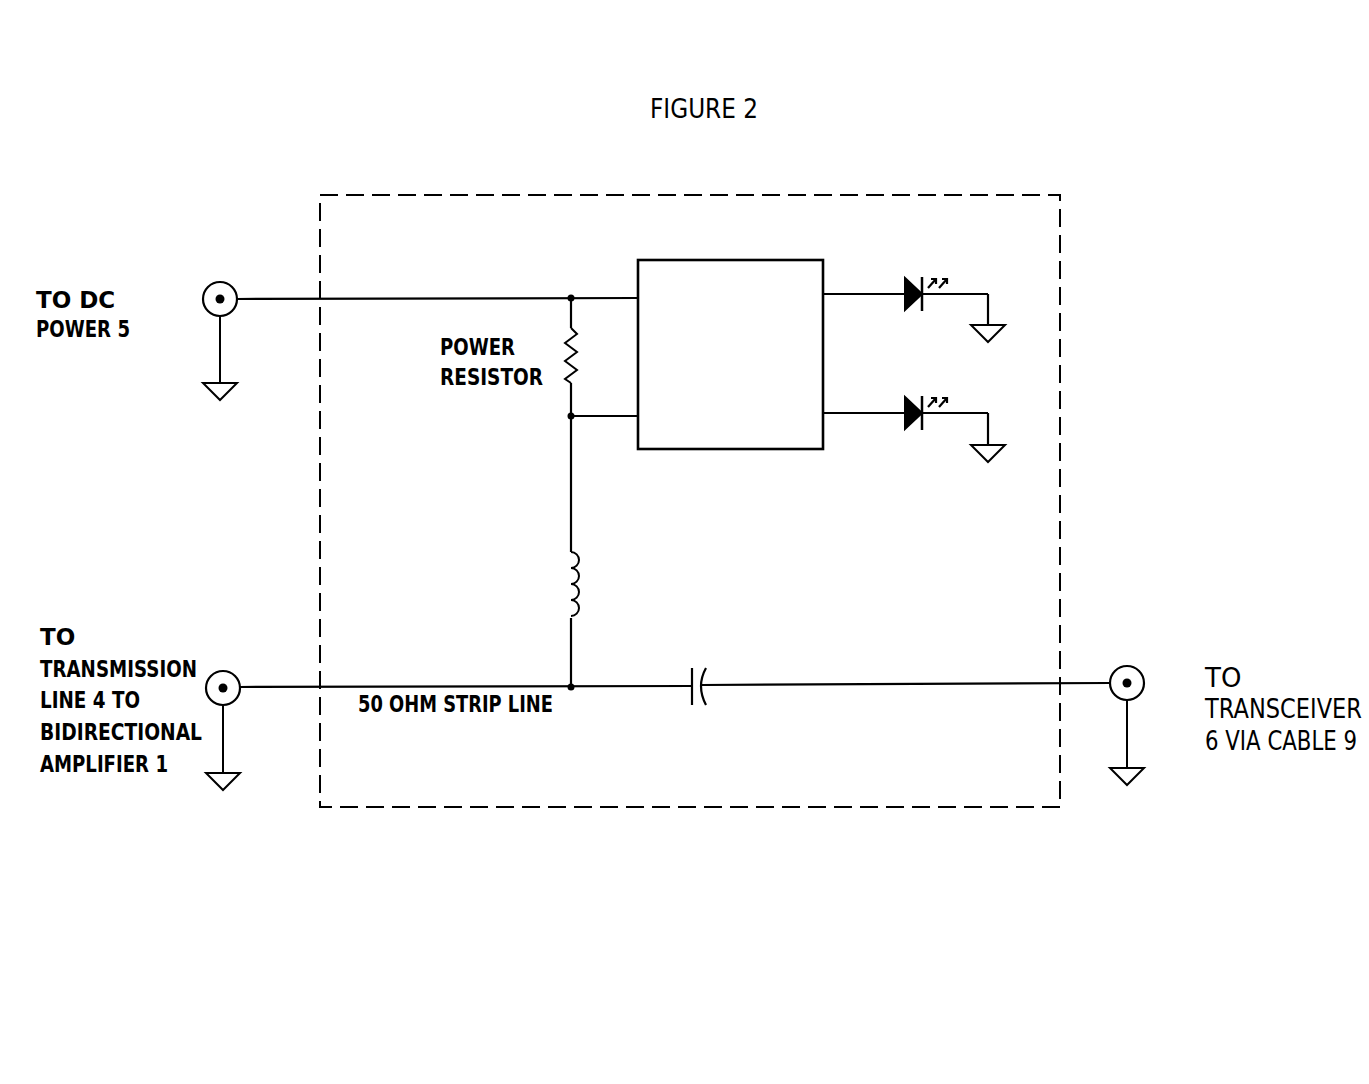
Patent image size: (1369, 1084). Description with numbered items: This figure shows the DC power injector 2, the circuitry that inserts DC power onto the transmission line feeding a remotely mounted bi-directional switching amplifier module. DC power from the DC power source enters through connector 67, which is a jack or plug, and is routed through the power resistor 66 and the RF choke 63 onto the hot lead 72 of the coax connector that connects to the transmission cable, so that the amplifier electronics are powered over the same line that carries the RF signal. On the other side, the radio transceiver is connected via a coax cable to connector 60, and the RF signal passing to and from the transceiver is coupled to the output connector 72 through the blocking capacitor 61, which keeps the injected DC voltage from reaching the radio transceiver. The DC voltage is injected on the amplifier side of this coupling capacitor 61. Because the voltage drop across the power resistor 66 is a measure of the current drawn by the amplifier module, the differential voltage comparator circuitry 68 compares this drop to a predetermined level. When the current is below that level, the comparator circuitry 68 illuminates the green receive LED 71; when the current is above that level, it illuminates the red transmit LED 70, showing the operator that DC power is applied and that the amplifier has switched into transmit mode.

The DC power injector 2 is at (890, 808).
The connector 60 is at (1123, 663).
The blocking capacitor 61 is at (705, 703).
The choke 63 is at (590, 570).
The power resistor 66 is at (589, 348).
The connector 67 is at (202, 289).
The differential voltage comparator circuitry 68 is at (739, 251).
The transmit (TX) LED 70 is at (888, 402).
The receive (RX) LED 71 is at (888, 283).
The hot lead of coax connector 72 is at (222, 665).